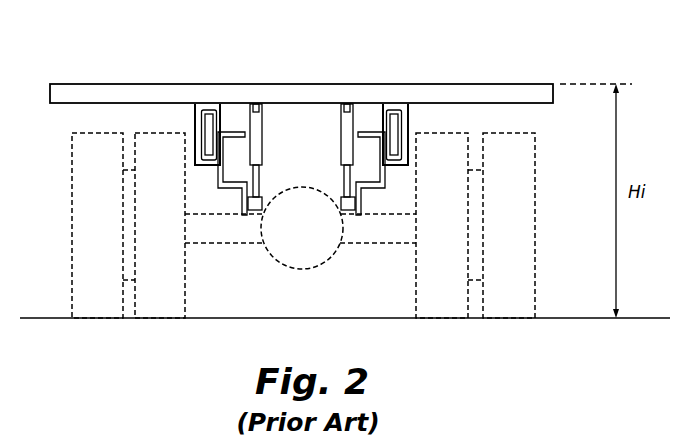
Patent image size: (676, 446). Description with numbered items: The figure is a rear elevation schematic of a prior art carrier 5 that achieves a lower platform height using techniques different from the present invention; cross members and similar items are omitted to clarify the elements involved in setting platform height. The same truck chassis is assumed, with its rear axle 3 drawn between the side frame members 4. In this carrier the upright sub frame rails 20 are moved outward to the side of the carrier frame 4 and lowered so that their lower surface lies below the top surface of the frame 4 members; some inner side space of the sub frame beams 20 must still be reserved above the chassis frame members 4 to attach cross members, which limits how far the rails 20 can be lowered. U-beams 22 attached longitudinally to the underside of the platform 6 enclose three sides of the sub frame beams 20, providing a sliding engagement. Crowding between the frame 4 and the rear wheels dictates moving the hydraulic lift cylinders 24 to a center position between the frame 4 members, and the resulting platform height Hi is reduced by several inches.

The rear axle 3 is at (309, 256).
The side frame members 4 is at (221, 194).
The prior art carrier 5 is at (120, 64).
The platform 6 is at (165, 88).
The upright sub frame rails 20 is at (301, 133).
The U-beams 22 is at (195, 128).
The hydraulic lift cylinders 24 is at (262, 135).